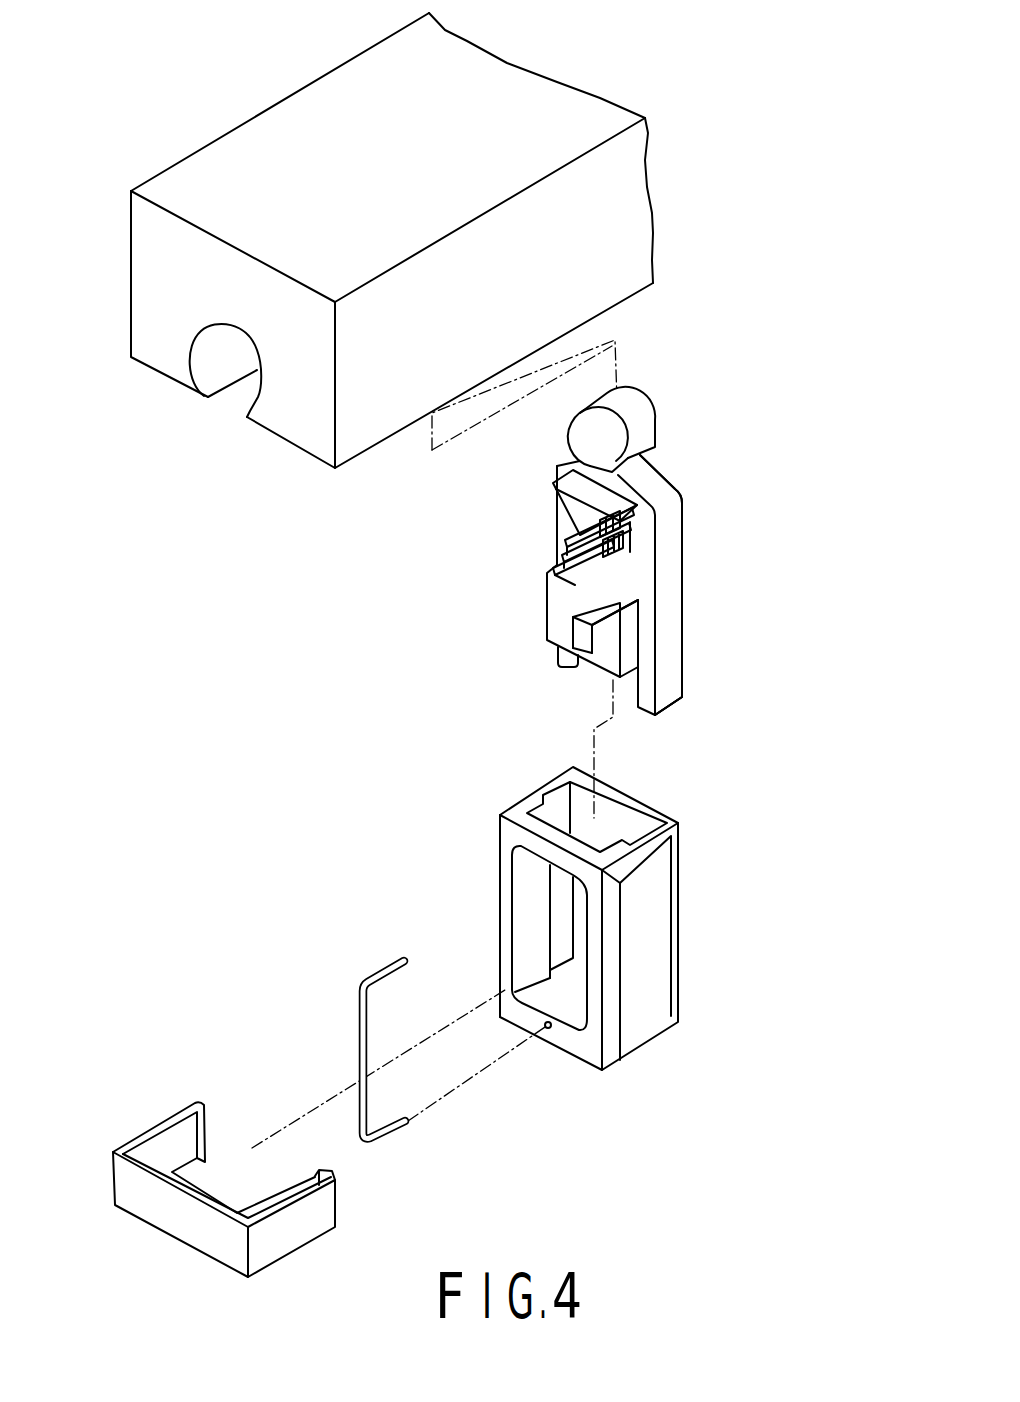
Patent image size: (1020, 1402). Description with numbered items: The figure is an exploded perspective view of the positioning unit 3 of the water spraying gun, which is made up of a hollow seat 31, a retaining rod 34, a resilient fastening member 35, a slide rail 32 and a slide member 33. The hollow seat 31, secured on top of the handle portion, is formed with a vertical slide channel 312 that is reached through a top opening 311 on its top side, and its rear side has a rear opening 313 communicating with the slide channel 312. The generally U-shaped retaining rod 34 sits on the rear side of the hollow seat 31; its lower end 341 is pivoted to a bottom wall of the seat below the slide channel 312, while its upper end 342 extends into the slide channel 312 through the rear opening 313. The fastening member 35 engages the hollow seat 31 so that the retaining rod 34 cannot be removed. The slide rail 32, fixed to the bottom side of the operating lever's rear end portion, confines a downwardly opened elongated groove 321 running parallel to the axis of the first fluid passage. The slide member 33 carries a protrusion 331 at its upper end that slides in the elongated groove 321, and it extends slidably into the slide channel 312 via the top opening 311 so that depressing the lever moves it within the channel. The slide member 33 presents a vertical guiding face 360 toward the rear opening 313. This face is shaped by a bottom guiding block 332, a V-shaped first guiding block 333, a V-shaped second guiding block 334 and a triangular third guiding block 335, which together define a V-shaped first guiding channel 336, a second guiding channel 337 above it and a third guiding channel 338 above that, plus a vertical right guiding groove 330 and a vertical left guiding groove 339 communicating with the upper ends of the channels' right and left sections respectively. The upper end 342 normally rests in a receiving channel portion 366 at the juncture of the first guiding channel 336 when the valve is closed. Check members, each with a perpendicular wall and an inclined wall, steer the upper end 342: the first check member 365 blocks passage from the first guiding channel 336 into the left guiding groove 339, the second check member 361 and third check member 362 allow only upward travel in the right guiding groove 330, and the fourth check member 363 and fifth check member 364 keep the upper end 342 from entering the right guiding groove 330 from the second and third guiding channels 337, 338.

The positioning unit 3 is at (700, 420).
The hollow seat 31 is at (595, 911).
The top opening 311 is at (613, 817).
The slide channel 312 is at (565, 904).
The rear opening 313 is at (533, 865).
The slide rail 32 is at (392, 267).
The elongated groove 321 is at (202, 358).
The slide member 33 is at (606, 572).
The right guiding groove 330 is at (633, 568).
The protrusion 331 is at (592, 422).
The bottom guiding block 332 is at (673, 697).
The first guiding block 333 is at (550, 583).
The second guiding block 334 is at (557, 543).
The third guiding block 335 is at (557, 490).
The first guiding channel 336 is at (625, 607).
The second guiding channel 337 is at (560, 563).
The third guiding channel 338 is at (557, 530).
The left guiding groove 339 is at (555, 532).
The retaining rod 34 is at (369, 1048).
The lower end 341 is at (400, 1128).
The upper end 342 is at (393, 958).
The resilient fastening member 35 is at (183, 1225).
The vertical guiding face 360 is at (645, 542).
The second check member 361 is at (630, 590).
The third check member 362 is at (637, 557).
The fourth check member 363 is at (633, 576).
The fifth check member 364 is at (672, 523).
The first check member 365 is at (556, 612).
The receiving channel portion 366 is at (583, 660).